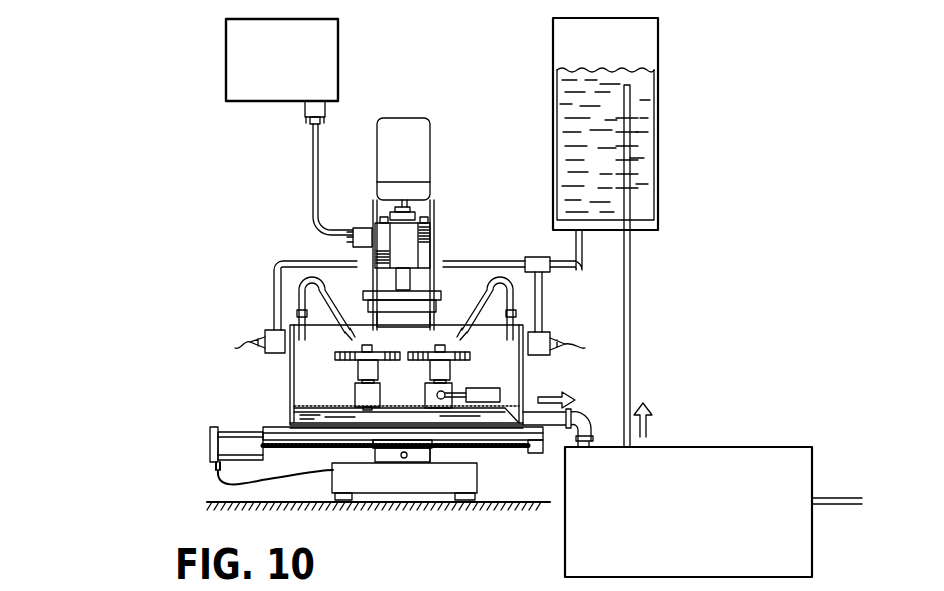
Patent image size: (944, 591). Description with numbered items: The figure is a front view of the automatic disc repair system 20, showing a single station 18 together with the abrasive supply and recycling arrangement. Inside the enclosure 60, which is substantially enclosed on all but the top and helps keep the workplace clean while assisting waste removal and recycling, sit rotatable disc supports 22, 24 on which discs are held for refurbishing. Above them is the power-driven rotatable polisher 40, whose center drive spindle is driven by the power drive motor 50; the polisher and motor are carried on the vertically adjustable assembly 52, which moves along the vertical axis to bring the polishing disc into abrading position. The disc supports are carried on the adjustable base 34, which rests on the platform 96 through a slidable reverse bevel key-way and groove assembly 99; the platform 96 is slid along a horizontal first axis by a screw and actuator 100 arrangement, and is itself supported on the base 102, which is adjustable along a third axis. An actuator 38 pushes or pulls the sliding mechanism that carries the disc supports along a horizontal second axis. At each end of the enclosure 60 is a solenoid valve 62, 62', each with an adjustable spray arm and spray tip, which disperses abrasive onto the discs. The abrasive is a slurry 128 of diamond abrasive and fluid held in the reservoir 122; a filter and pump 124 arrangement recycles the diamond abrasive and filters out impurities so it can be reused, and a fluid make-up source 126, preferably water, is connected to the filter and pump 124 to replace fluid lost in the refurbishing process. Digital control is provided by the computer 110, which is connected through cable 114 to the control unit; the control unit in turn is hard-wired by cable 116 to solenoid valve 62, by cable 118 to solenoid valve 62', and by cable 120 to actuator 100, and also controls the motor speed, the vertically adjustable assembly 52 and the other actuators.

The station 18 is at (112, 433).
The automatic disc repair system 20 is at (147, 490).
The rotatable disc support 22 is at (355, 389).
The rotatable disc support 24 is at (455, 391).
The adjustable base 34 is at (295, 412).
The actuator 38 is at (530, 392).
The power-driven rotatable polisher 40 is at (443, 291).
The power drive motor 50 is at (419, 117).
The vertically adjustable assembly 52 is at (434, 233).
The enclosure 60 is at (290, 363).
The solenoid valve 62 is at (283, 302).
The solenoid valve 62' is at (521, 292).
The platform 96 is at (431, 456).
The slidable reverse bevel key-way and groove assembly 99 is at (370, 447).
The actuator 100 is at (215, 427).
The base 102 is at (478, 482).
The computer 110 is at (340, 60).
The cable 114 is at (312, 157).
The cable 116 is at (248, 342).
The cable 118 is at (575, 340).
The cable 120 is at (218, 483).
The reservoir 122 is at (660, 40).
The filter and pump 124 is at (745, 447).
The fluid make-up source 126 is at (834, 497).
The slurry 128 is at (648, 163).